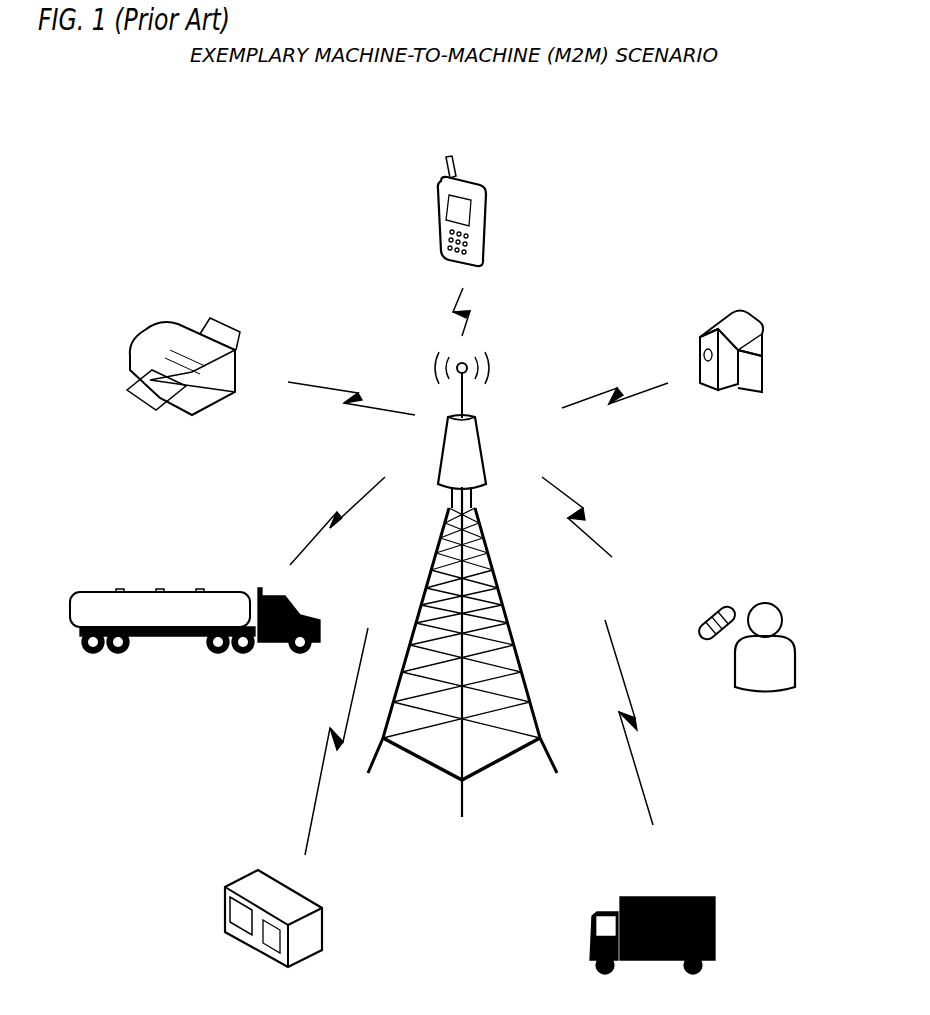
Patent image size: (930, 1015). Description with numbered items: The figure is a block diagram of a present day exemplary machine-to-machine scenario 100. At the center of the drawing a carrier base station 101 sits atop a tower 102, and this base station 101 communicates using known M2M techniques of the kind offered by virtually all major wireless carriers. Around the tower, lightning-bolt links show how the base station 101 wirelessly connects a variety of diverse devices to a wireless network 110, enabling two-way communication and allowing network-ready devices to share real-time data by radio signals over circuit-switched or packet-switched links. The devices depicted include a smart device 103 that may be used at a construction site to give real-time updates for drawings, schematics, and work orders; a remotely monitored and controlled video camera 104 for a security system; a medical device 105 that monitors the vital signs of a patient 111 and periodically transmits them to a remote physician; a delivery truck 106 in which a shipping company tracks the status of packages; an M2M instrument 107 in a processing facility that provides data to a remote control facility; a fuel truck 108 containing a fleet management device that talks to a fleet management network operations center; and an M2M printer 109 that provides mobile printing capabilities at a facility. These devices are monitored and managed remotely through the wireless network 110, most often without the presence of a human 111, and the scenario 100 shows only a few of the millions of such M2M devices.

The machine-to-machine scenario 100 is at (773, 94).
The carrier base station 101 is at (482, 454).
The tower 102 is at (533, 718).
The smart device 103 is at (486, 192).
The video camera 104 is at (762, 342).
The medical device 105 is at (700, 622).
The delivery truck 106 is at (716, 934).
The M2M instrument 107 is at (323, 918).
The fuel truck 108 is at (322, 616).
The M2M printer 109 is at (237, 380).
The wireless network 110 is at (588, 507).
The human 111 is at (795, 637).